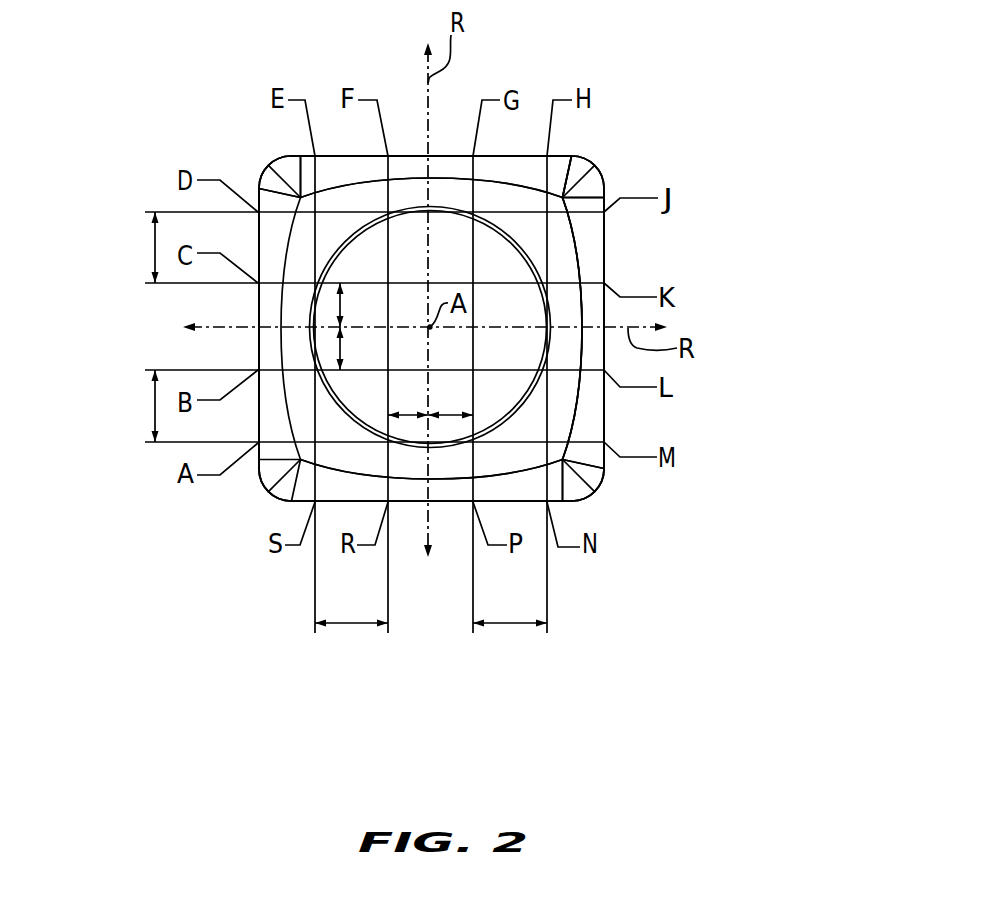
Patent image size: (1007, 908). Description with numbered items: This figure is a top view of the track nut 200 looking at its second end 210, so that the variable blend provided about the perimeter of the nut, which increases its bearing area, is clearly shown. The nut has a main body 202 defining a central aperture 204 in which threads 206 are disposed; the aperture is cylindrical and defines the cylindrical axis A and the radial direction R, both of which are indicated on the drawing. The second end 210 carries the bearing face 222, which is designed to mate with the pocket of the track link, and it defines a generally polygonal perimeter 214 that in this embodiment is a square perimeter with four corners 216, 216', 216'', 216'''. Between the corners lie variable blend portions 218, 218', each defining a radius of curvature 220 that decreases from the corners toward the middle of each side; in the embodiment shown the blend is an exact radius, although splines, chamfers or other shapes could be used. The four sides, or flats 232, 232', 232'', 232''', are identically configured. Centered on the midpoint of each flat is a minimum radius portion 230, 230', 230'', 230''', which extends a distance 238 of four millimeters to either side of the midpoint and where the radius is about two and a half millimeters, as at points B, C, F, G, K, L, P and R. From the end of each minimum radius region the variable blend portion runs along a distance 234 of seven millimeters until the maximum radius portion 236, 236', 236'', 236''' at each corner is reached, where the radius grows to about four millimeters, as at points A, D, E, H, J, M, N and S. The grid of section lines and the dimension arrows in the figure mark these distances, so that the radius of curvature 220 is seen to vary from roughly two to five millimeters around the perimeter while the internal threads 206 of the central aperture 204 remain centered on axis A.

The track nut 200 is at (668, 105).
The main body 202 is at (431, 328).
The central aperture 204 is at (507, 273).
The threads 206 is at (530, 252).
The second end 210 is at (563, 387).
The polygonal perimeter 214 is at (605, 269).
The corner 216 is at (228, 512).
The corner 216' is at (642, 486).
The corner 216'' is at (636, 155).
The corner 216''' is at (249, 130).
The variable blend portion 218 is at (411, 156).
The variable blend portion 218' is at (453, 530).
The radius of curvature 220 is at (325, 157).
The bearing face 222 is at (584, 308).
The minimum radius portion 230 is at (453, 537).
The minimum radius portion 230' is at (665, 308).
The minimum radius portion 230'' is at (411, 117).
The minimum radius portion 230''' is at (235, 350).
The flat 232 is at (222, 328).
The flat 232' is at (431, 555).
The flat 232'' is at (691, 328).
The flat 232''' is at (431, 96).
The distance 234 is at (152, 243).
The maximum radius portion 236 is at (250, 163).
The maximum radius portion 236' is at (604, 149).
The maximum radius portion 236'' is at (626, 500).
The maximum radius portion 236''' is at (234, 490).
The distance 238 is at (343, 348).